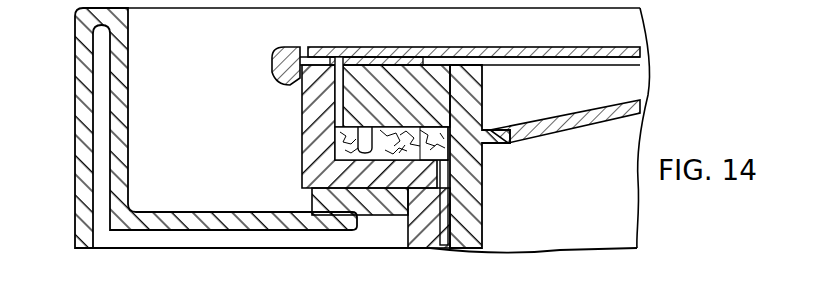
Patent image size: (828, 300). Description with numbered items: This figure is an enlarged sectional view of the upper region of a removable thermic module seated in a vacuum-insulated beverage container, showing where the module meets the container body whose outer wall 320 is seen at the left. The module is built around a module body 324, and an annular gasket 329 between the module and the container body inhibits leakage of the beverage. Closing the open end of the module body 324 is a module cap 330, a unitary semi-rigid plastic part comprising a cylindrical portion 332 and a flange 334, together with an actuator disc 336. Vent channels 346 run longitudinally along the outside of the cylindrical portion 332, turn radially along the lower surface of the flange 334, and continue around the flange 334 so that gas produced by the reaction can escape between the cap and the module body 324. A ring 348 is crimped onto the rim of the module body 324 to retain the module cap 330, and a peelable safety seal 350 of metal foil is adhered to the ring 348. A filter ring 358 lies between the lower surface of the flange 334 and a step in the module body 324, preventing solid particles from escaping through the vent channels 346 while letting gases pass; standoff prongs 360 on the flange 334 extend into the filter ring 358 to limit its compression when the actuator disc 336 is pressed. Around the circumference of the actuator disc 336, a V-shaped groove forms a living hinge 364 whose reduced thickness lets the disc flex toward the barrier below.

The outer wall 320 is at (82, 165).
The module body 324 is at (433, 231).
The annular gasket 329 is at (310, 198).
The module cap 330 is at (463, 52).
The cylindrical portion 332 is at (483, 185).
The flange 334 is at (398, 72).
The actuator disc 336 is at (625, 107).
The vent channels 346 is at (338, 75).
The ring 348 is at (278, 56).
The safety seal 350 is at (618, 47).
The filter ring 358 is at (447, 124).
The standoff prongs 360 is at (365, 142).
The living hinge 364 is at (510, 140).